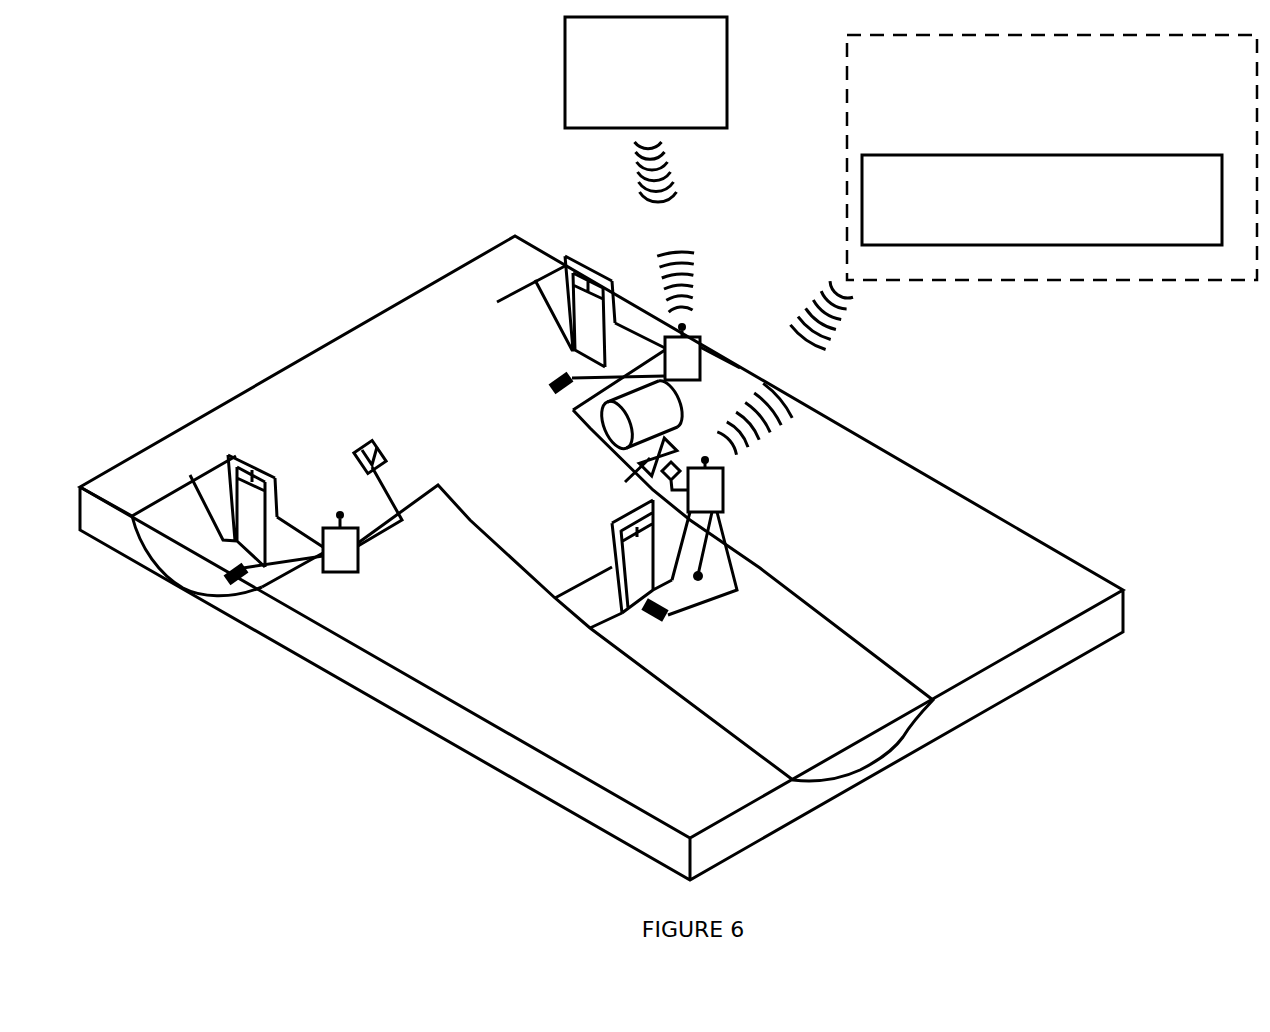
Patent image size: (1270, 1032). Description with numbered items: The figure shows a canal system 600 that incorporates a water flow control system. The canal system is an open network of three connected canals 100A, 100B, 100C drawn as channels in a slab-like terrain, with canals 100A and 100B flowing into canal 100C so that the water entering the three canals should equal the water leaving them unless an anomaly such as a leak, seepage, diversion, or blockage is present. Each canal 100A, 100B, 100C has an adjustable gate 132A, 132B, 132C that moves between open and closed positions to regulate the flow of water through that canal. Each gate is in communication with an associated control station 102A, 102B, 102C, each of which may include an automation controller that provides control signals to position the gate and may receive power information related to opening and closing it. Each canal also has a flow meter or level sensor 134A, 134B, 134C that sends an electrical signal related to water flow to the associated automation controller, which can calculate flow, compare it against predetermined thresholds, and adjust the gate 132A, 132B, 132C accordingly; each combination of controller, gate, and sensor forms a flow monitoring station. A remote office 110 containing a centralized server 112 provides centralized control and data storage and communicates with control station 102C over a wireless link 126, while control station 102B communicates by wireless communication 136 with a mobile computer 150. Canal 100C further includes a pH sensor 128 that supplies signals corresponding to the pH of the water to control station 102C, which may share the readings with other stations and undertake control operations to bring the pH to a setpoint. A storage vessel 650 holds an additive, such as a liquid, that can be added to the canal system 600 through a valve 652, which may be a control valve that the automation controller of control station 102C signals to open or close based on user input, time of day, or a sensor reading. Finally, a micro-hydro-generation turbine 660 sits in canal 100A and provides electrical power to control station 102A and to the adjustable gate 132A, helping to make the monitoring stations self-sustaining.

The mobile computer 150 is at (565, 33).
The wireless communication 136 is at (649, 236).
The centralized server 112 is at (1112, 155).
The remote office 110 is at (1147, 281).
The wireless communication 126 is at (806, 373).
The canal system 600 is at (304, 357).
The canal 100A is at (205, 533).
The canal 100B is at (527, 347).
The canal 100C is at (807, 699).
The adjustable gate 132A is at (262, 532).
The adjustable gate 132B is at (592, 338).
The adjustable gate 132C is at (630, 588).
The flow meter or level sensor 134A is at (236, 584).
The flow meter or level sensor 134B is at (548, 386).
The flow meter or level sensor 134C is at (658, 620).
The control station 102A is at (345, 573).
The control station 102B is at (696, 346).
The control station 102C is at (724, 487).
The storage vessel 650 is at (672, 413).
The valve 652 is at (640, 466).
The micro-hydro-generation turbine 660 is at (382, 445).
The pH sensor 128 is at (700, 582).